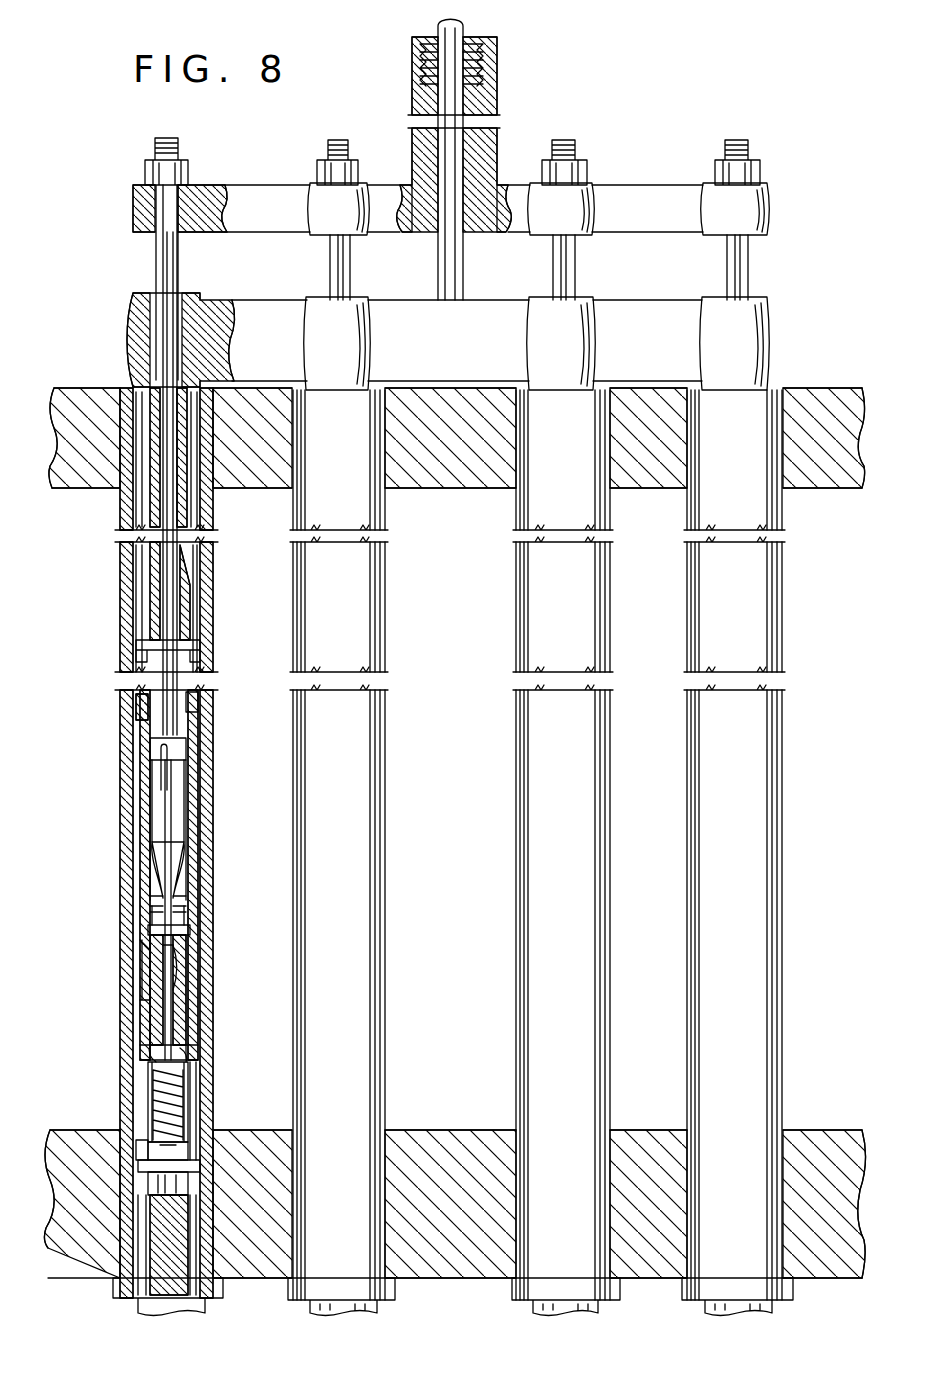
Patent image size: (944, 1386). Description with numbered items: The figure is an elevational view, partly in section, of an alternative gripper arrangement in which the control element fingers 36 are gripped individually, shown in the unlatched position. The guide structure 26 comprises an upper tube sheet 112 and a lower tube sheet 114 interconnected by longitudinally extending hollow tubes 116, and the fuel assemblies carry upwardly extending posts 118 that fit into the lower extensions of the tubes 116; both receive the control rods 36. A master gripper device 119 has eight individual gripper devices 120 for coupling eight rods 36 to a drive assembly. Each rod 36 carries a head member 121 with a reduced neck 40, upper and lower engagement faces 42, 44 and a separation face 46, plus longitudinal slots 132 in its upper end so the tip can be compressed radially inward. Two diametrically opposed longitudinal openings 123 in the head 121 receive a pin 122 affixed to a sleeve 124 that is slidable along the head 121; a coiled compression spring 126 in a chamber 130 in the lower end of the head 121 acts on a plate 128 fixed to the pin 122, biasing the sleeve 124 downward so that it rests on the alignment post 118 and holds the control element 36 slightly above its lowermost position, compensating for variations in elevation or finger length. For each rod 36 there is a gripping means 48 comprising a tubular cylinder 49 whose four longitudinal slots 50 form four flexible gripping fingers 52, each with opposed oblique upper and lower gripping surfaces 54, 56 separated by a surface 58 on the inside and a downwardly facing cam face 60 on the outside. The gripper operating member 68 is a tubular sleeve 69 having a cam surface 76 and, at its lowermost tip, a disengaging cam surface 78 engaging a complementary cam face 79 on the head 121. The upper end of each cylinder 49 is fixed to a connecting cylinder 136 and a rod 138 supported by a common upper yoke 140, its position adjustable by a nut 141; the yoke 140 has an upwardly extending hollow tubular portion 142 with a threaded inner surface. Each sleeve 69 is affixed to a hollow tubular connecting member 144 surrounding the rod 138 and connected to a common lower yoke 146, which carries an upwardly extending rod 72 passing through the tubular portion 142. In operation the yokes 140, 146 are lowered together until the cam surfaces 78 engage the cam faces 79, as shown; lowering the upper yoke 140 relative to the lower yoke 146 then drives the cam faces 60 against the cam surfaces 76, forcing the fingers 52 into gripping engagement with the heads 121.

The guide structure 26 is at (798, 632).
The control element finger 36 is at (178, 1254).
The reduced neck 40 is at (186, 955).
The upper engagement face 42 is at (196, 930).
The lower engagement face 44 is at (186, 948).
The separation face 46 is at (190, 936).
The gripping means 48 is at (150, 750).
The tubular cylinder 49 is at (160, 776).
The longitudinal slot 50 is at (196, 782).
The flexible gripping finger 52 is at (186, 878).
The upper gripping surface 54 is at (148, 866).
The lower gripping surface 56 is at (148, 914).
The surface 58 is at (140, 900).
The cam face 60 is at (206, 912).
The gripper operating member 68 is at (134, 660).
The tubular sleeve 69 is at (138, 710).
The rod 72 is at (460, 22).
The cam surface 76 is at (142, 948).
The disengaging cam surface 78 is at (156, 1052).
The cam face 79 is at (188, 1062).
The upper tube sheet 112 is at (495, 490).
The lower tube sheet 114 is at (426, 1132).
The hollow tube 116 is at (120, 612).
The post 118 is at (136, 1212).
The master gripper device 119 is at (558, 122).
The individual gripper device 120 is at (200, 746).
The head member 121 is at (192, 1076).
The pin 122 is at (196, 1168).
The longitudinal opening 123 is at (140, 1150).
The sleeve 124 is at (190, 1186).
The coiled compression spring 126 is at (150, 1092).
The plate 128 is at (178, 1152).
The chamber 130 is at (152, 1116).
The longitudinal slot 132 is at (166, 1000).
The connecting cylinder 136 is at (192, 692).
The rod 138 is at (160, 260).
The upper yoke 140 is at (238, 189).
The nut 141 is at (186, 160).
The hollow tubular portion 142 is at (486, 106).
The tubular connecting member 144 is at (150, 585).
The lower yoke 146 is at (456, 355).